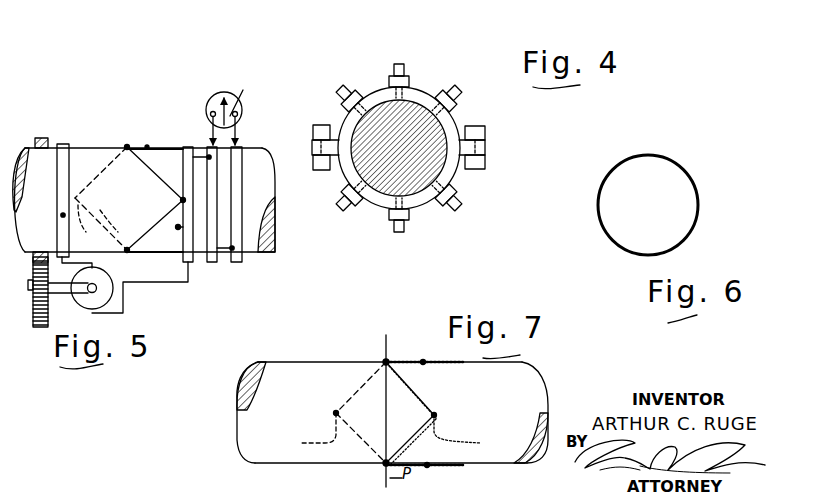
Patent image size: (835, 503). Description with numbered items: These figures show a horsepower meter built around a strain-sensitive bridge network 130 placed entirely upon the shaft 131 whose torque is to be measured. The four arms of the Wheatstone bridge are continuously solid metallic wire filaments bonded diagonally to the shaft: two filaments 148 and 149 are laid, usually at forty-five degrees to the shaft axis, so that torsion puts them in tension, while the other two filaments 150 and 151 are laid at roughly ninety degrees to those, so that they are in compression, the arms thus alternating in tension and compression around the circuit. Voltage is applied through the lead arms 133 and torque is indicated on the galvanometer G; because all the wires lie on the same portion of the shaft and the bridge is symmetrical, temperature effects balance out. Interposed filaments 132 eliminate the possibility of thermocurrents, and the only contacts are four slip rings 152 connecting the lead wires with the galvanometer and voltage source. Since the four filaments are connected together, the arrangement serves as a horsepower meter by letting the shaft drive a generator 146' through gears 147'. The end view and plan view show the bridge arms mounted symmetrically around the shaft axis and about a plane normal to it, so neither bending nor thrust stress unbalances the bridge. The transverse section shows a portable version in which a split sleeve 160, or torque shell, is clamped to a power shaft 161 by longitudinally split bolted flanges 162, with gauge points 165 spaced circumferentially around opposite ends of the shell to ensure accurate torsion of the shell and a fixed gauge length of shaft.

In FIG. 5, the bridge network 130 is at (88, 172).
In FIG. 5, the shaft 131 is at (27, 242).
In FIG. 6, the shaft 131 is at (680, 192).
In FIG. 7, the shaft 131 is at (292, 375).
In FIG. 5, the interposed filaments 132 is at (137, 131).
In FIG. 7, the interposed filaments 132 is at (412, 358).
In FIG. 5, the lead arms 133 is at (173, 146).
In FIG. 5, the generator 146' is at (118, 294).
In FIG. 5, the gears 147' is at (25, 304).
In FIG. 5, the tension filament 148 is at (146, 173).
In FIG. 6, the tension filament 148 is at (620, 158).
In FIG. 7, the tension filament 148 is at (427, 400).
In FIG. 5, the tension filament 149 is at (109, 224).
In FIG. 6, the tension filament 149 is at (683, 245).
In FIG. 7, the tension filament 149 is at (362, 435).
In FIG. 5, the compression filament 150 is at (149, 224).
In FIG. 6, the compression filament 150 is at (672, 157).
In FIG. 7, the compression filament 150 is at (413, 443).
In FIG. 5, the compression filament 151 is at (101, 177).
In FIG. 6, the compression filament 151 is at (610, 237).
In FIG. 7, the compression filament 151 is at (362, 393).
In FIG. 5, the slip rings 152 is at (63, 143).
In FIG. 4, the split sleeve 160 is at (419, 95).
In FIG. 4, the power shaft 161 is at (421, 116).
In FIG. 4, the bolted flanges 162 is at (312, 153).
In FIG. 4, the gauge points 165 is at (392, 71).
In FIG. 5, the galvanometer G is at (231, 111).